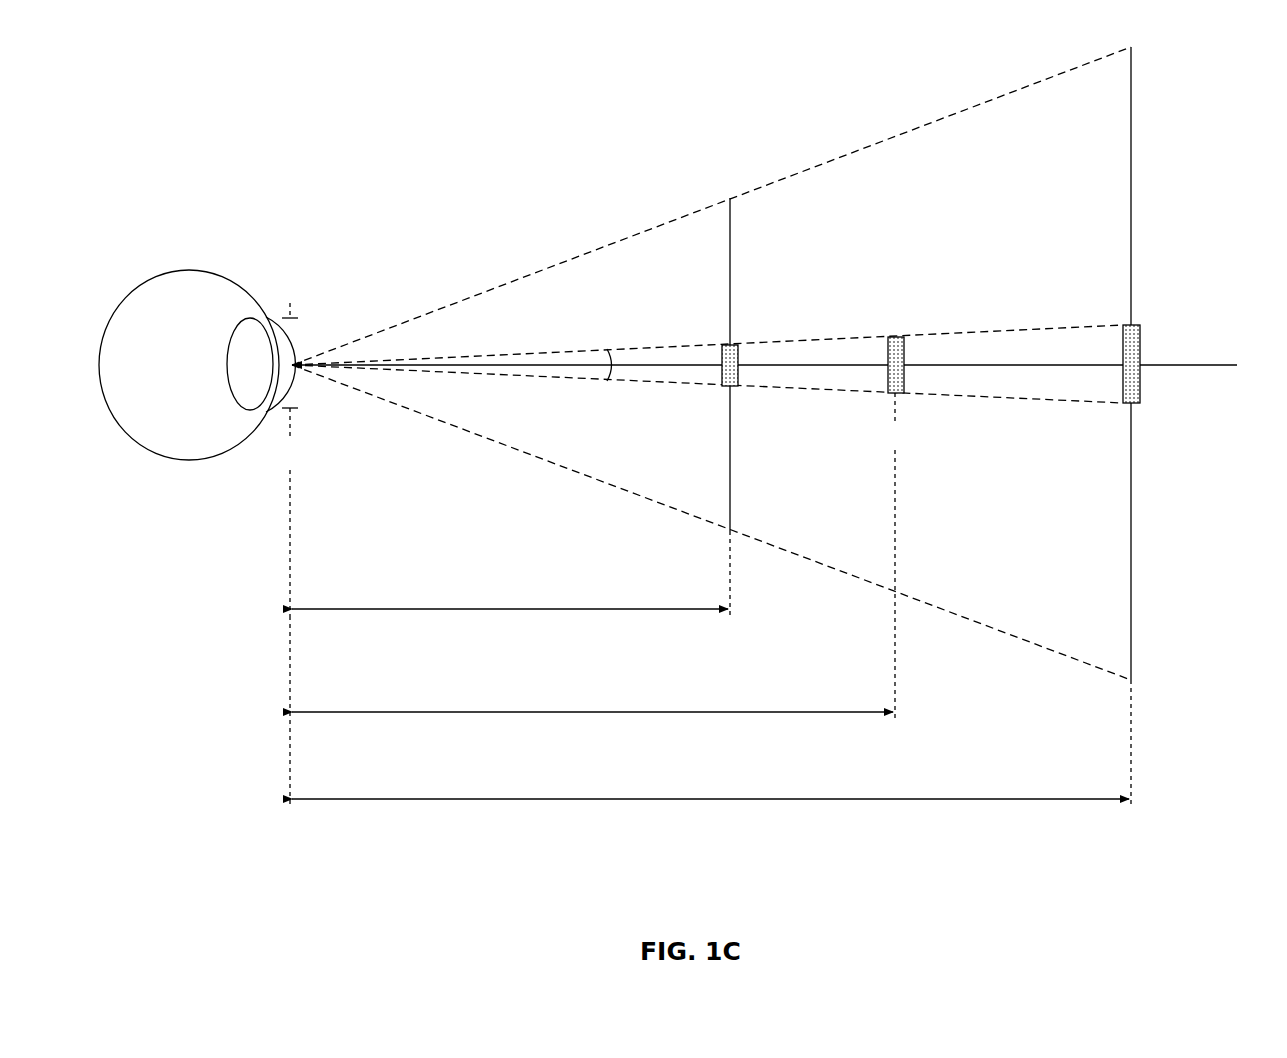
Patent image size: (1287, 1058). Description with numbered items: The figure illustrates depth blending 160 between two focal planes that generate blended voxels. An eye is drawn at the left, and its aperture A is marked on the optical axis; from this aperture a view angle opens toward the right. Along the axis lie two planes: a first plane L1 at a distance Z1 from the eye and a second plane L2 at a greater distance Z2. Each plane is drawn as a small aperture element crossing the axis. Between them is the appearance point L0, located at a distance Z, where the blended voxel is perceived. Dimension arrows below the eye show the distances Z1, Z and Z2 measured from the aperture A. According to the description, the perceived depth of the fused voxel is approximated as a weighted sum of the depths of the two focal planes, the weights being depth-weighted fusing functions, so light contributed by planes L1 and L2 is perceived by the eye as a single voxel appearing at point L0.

The depth blending 160 is at (203, 76).
The aperture of the eye A is at (288, 388).
The first plane for generating blended voxels L1 is at (777, 364).
The appearance point of the blended voxel L0 is at (894, 395).
The second plane for generating blended voxels L2 is at (1166, 363).
The distance to first plane Z1 is at (510, 563).
The distance to appearance point Z is at (592, 604).
The distance to second plane Z2 is at (710, 767).